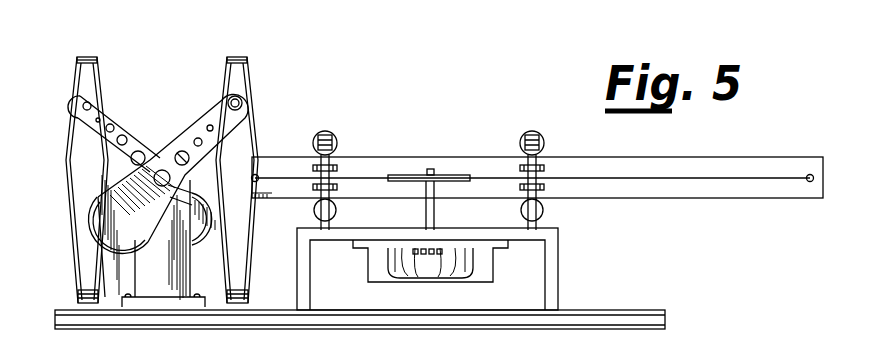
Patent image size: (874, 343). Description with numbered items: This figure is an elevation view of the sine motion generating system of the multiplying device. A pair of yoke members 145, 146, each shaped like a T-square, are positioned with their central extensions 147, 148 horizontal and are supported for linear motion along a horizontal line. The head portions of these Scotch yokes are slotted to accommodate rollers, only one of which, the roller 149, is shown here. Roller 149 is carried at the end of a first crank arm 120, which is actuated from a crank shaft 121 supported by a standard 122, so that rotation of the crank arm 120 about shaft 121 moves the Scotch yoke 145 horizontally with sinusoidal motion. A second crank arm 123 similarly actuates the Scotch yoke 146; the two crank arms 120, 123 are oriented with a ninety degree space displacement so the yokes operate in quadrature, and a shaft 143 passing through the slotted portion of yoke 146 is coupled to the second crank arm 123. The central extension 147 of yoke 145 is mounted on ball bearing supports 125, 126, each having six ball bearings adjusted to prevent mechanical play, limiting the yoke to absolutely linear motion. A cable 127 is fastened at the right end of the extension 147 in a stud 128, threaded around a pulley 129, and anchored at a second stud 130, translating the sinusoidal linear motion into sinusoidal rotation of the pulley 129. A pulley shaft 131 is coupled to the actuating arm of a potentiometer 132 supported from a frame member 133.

The first crank arm 120 is at (207, 130).
The crank shaft 121 is at (162, 170).
The standard 122 is at (180, 267).
The second crank arm 123 is at (110, 113).
The ball bearing support 125 is at (331, 127).
The ball bearing support 126 is at (543, 127).
The cable 127 is at (672, 180).
The stud 128 is at (810, 182).
The pulley 129 is at (460, 175).
The second stud 130 is at (262, 167).
The pulley shaft 131 is at (427, 171).
The potentiometer 132 is at (462, 272).
The frame member 133 is at (330, 233).
The shaft 143 is at (79, 105).
The yoke member 145 is at (247, 72).
The yoke member 146 is at (101, 63).
The central extension 147 is at (740, 162).
The central extension 148 is at (203, 183).
The roller 149 is at (241, 100).